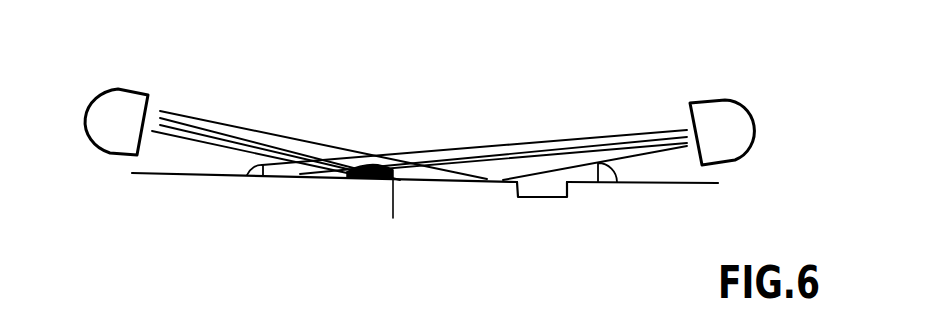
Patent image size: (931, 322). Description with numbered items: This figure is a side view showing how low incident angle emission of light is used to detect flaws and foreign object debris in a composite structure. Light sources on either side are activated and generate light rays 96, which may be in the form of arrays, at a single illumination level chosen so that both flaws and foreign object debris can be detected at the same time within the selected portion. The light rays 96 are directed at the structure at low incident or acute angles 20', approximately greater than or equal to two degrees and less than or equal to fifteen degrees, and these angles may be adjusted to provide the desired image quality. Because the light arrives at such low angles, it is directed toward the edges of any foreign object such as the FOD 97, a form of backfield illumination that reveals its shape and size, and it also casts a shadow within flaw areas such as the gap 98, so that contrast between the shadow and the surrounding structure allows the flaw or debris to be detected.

The low incident angle 20' is at (460, 207).
The light rays 96 is at (425, 153).
The FOD 97 is at (363, 180).
The gap 98 is at (553, 198).